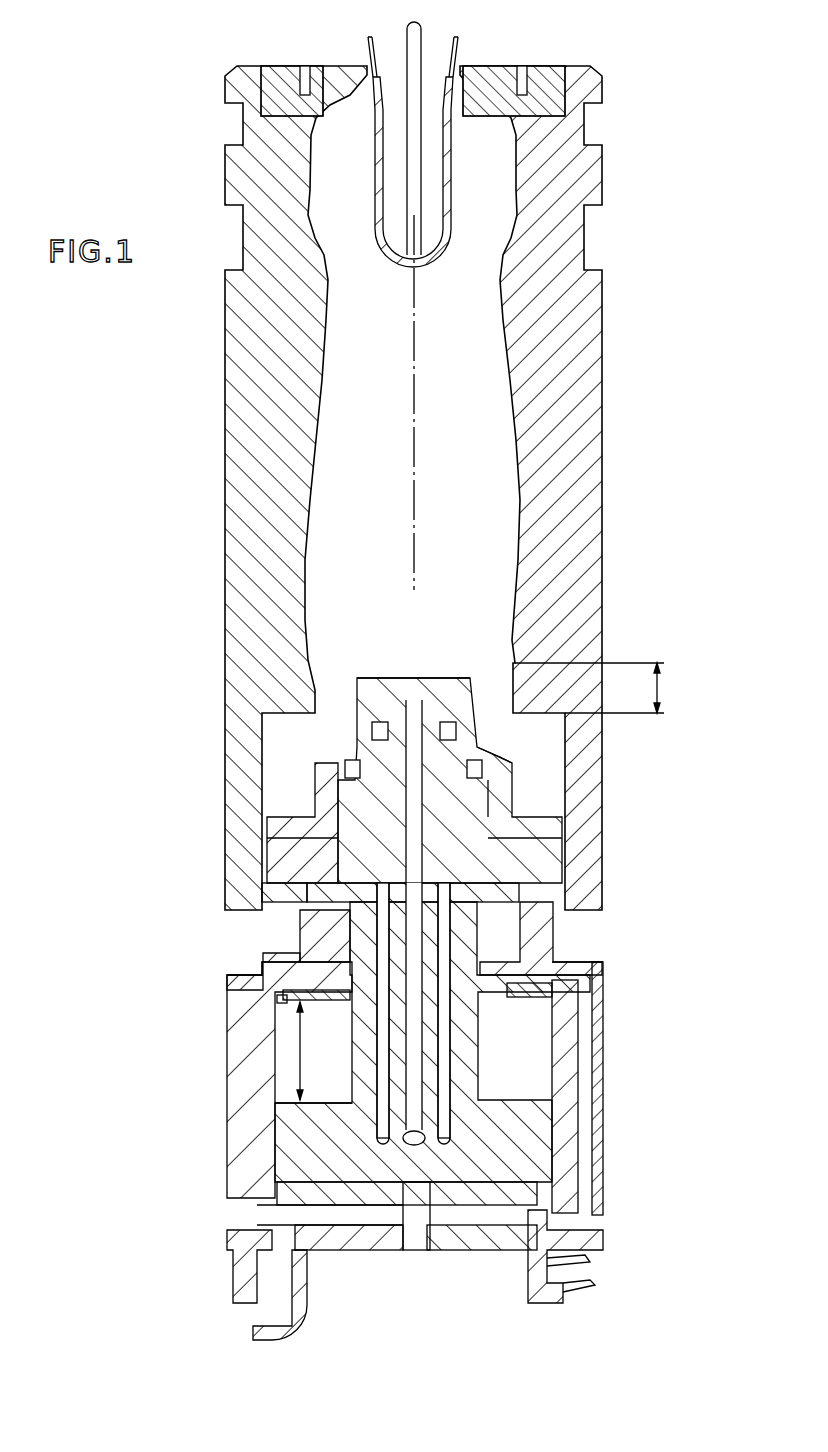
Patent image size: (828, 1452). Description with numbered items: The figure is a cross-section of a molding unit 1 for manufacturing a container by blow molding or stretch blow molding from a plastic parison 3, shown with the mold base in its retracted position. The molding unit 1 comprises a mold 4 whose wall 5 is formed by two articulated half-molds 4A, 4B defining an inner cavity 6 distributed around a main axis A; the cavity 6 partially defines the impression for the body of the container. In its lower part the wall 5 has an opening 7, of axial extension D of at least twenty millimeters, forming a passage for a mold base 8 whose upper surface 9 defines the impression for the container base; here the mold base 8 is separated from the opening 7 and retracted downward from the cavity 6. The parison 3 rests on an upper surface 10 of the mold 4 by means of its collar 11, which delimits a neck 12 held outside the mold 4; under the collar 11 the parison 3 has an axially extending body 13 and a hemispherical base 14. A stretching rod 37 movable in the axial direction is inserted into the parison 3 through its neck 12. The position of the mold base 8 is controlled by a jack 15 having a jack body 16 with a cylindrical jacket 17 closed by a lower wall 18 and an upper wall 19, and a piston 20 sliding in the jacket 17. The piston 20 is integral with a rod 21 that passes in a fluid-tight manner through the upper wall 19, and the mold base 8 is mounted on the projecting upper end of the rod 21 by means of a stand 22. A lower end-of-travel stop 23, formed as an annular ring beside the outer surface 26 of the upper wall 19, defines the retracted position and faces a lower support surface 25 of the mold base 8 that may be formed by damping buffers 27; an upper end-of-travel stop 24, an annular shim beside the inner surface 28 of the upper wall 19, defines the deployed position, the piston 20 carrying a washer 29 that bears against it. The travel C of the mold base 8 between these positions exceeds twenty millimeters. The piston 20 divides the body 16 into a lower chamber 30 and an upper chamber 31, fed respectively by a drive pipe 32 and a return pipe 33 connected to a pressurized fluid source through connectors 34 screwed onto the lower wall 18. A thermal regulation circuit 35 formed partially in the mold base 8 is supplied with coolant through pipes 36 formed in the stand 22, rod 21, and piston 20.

The molding unit 1 is at (640, 432).
The parison 3 is at (413, 157).
The mold 4 is at (604, 330).
The half-mold 4A is at (590, 530).
The half-mold 4B is at (230, 475).
The wall 5 is at (530, 468).
The inner cavity 6 is at (375, 449).
The opening 7 is at (316, 680).
The mold base 8 is at (470, 743).
The upper surface 9 is at (455, 676).
The upper surface 10 is at (368, 70).
The collar 11 is at (462, 70).
The neck 12 is at (457, 52).
The body 13 is at (380, 167).
The base 14 is at (432, 258).
The jack 15 is at (420, 1058).
The jack body 16 is at (226, 1120).
The cylindrical jacket 17 is at (232, 1060).
The lower wall 18 is at (473, 1248).
The upper wall 19 is at (238, 985).
The piston 20 is at (505, 1167).
The rod 21 is at (476, 1088).
The stand 22 is at (470, 846).
The lower end-of-travel stop 23 is at (300, 895).
The upper end-of-travel stop 24 is at (288, 1004).
The lower support surface 25 is at (283, 920).
The outer surface 26 is at (568, 960).
The buffers 27 is at (272, 897).
The inner surface 28 is at (344, 1002).
The washer 29 is at (305, 1104).
The lower chamber 30 is at (338, 1180).
The upper chamber 31 is at (517, 1036).
The drive pipe 32 is at (360, 1218).
The return pipe 33 is at (583, 1143).
The connectors 34 is at (298, 1323).
The thermal regulation circuit 35 is at (375, 737).
The pipes 36 is at (434, 1128).
The stretching rod 37 is at (405, 105).
The main axis A is at (416, 347).
The travel C is at (286, 1051).
The axial extension D is at (614, 688).